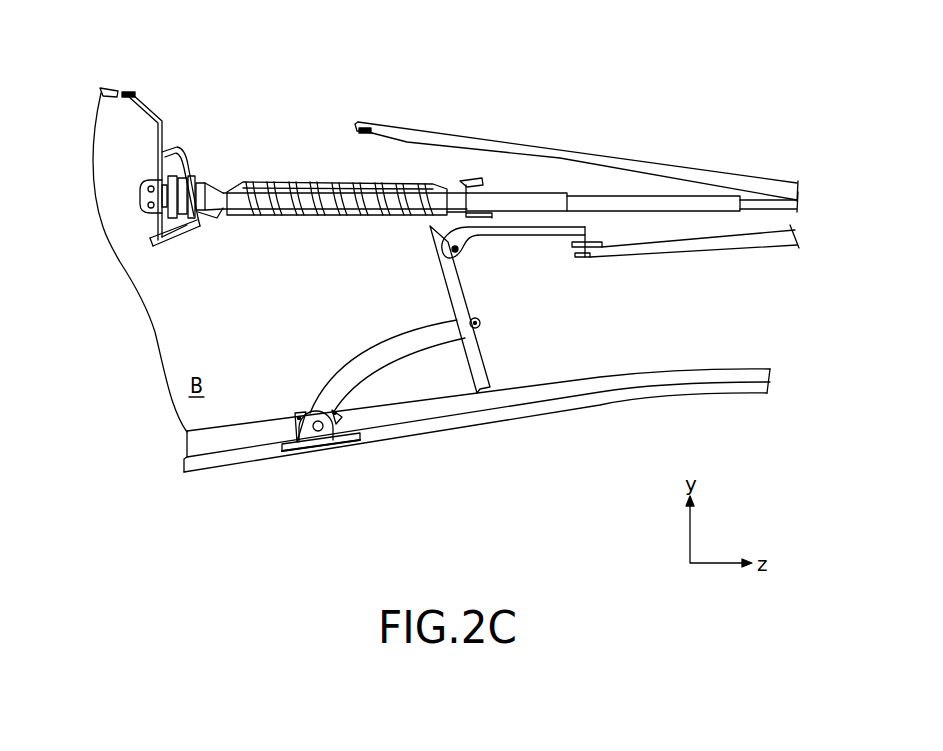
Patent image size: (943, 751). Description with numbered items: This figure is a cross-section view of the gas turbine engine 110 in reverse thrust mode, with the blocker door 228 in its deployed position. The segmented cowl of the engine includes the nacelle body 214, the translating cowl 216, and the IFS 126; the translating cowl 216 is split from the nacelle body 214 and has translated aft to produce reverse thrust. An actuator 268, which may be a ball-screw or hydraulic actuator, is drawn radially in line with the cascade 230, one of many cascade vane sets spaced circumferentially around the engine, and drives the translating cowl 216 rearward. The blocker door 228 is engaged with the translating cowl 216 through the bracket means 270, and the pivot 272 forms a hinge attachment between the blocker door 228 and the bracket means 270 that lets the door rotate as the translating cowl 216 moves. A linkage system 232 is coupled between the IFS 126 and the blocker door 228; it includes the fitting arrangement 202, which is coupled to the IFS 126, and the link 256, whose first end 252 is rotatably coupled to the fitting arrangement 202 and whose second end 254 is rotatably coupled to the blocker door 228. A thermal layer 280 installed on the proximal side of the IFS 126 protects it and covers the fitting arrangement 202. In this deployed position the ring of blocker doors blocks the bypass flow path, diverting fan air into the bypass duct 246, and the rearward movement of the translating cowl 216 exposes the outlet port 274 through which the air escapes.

The gas turbine engine 110 is at (576, 116).
The IFS 126 is at (232, 457).
The fitting arrangement 202 is at (328, 466).
The nacelle body 214 is at (106, 88).
The translating cowl 216 is at (478, 141).
The blocker door 228 is at (456, 309).
The cascade 230 is at (324, 152).
The linkage system 232 is at (342, 373).
The bypass duct 246 is at (510, 145).
The first end 252 is at (286, 403).
The second end 254 is at (499, 333).
The link 256 is at (379, 342).
The actuator 268 is at (133, 161).
The bracket means 270 is at (620, 276).
The pivot 272 is at (461, 250).
The outlet port 274 is at (428, 135).
The thermal layer 280 is at (424, 433).